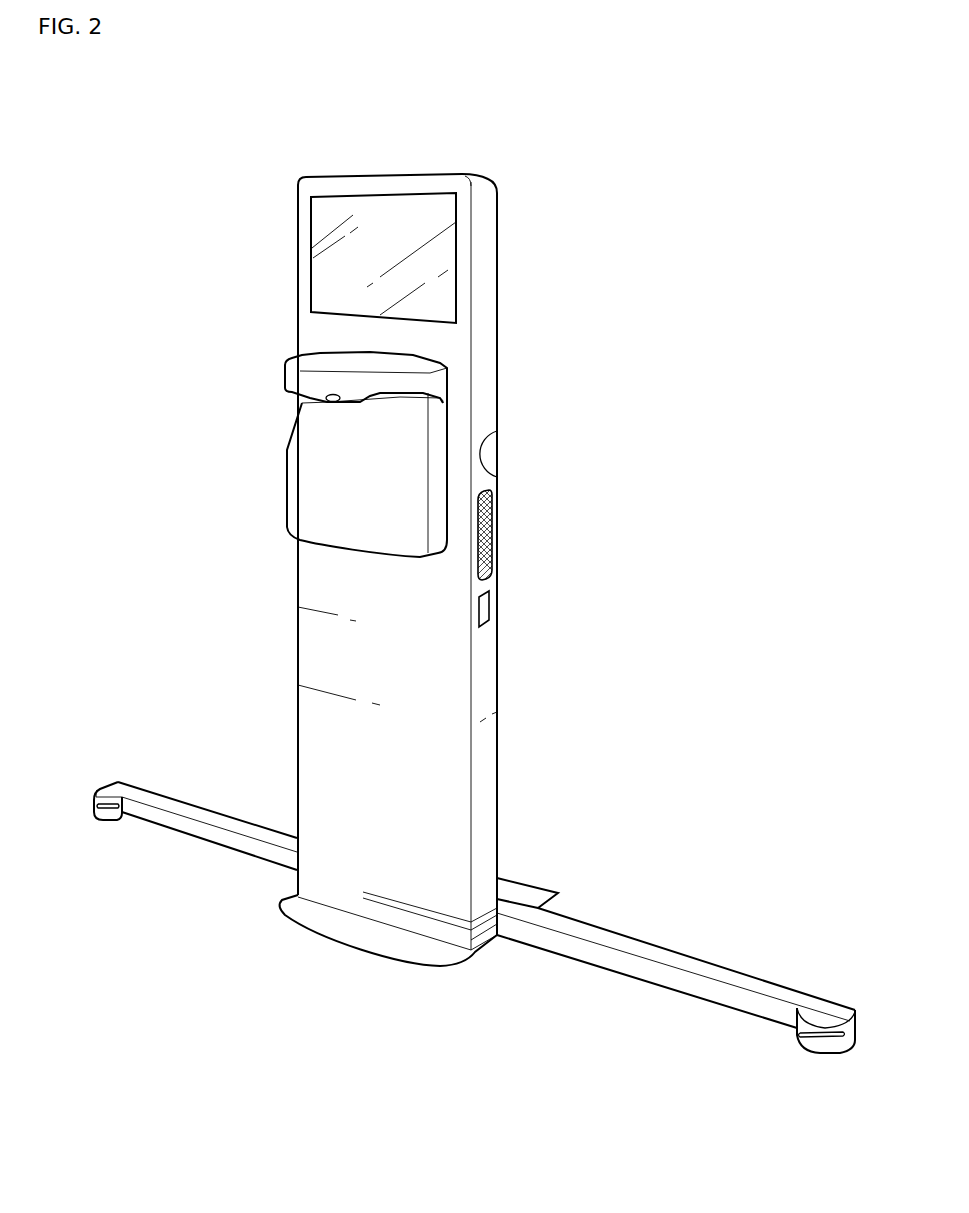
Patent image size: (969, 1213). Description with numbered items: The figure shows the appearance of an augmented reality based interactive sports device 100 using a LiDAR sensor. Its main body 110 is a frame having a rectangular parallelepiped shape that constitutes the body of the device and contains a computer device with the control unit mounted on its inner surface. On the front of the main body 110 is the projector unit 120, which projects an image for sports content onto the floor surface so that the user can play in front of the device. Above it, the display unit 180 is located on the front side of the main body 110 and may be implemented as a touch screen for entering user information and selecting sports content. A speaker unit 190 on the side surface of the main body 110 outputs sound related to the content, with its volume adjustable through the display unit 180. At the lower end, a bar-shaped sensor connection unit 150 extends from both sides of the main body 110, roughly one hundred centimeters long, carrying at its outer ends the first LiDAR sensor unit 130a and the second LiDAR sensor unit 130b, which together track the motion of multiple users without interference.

The augmented reality based interactive sports device 100 is at (202, 187).
The main body 110 is at (491, 298).
The projector unit 120 is at (295, 374).
The first LiDAR sensor unit 130a is at (107, 812).
The second LiDAR sensor unit 130b is at (820, 1045).
The sensor connection unit 150 is at (205, 835).
The display unit 180 is at (318, 272).
The speaker unit 190 is at (492, 535).